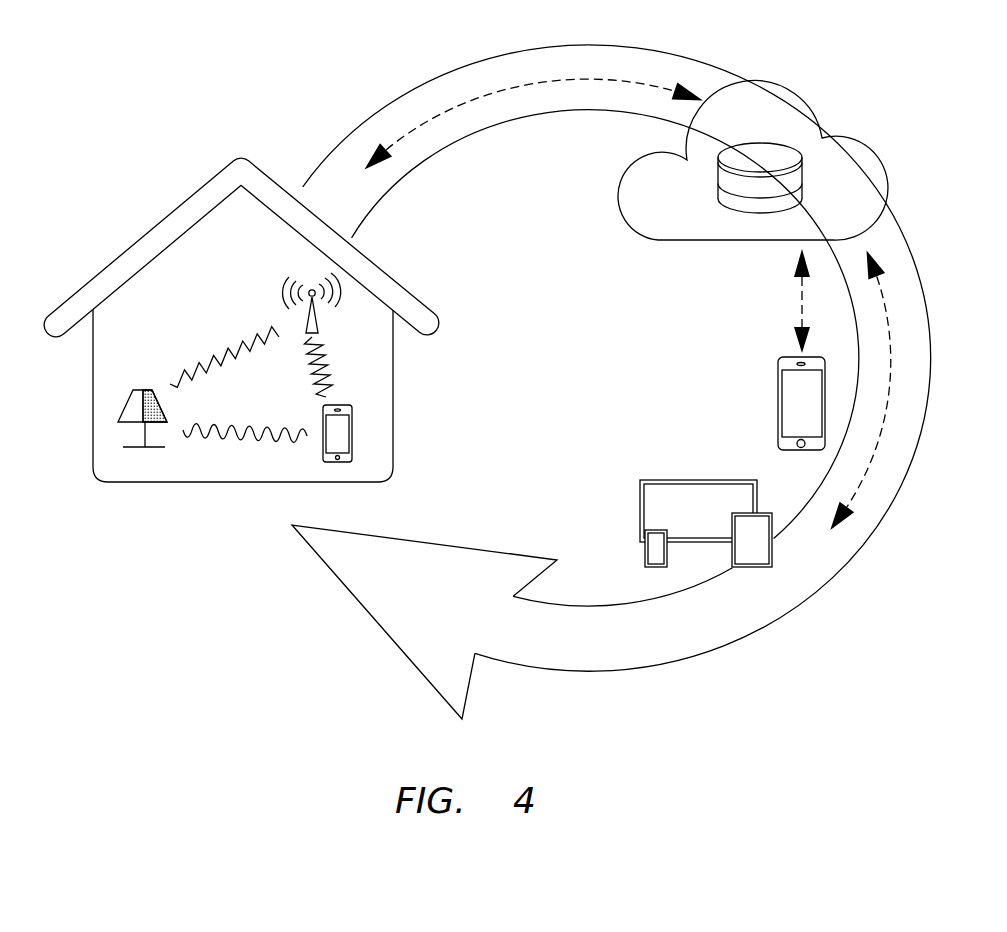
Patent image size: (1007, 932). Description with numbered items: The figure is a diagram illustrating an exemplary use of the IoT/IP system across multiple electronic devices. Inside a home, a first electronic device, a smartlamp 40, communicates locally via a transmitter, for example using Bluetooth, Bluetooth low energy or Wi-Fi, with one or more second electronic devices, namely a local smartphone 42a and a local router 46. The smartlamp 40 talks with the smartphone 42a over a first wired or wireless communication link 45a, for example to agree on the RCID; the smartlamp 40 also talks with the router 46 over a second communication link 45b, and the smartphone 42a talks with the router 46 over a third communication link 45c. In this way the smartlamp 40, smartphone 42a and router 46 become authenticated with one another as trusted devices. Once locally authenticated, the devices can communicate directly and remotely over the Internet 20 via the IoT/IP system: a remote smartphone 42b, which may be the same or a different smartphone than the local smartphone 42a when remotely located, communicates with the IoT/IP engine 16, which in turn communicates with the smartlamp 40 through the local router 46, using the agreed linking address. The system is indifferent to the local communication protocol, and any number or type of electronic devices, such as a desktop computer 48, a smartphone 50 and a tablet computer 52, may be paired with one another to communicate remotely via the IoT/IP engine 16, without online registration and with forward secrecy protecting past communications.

The IoT/IP engine 16 is at (772, 143).
The Internet 20 is at (627, 197).
The smartlamp 40 is at (118, 413).
The local smartphone 42a is at (352, 423).
The remote smartphone 42b is at (778, 372).
The first communication link 45a is at (225, 445).
The second communication link 45b is at (200, 355).
The third communication link 45c is at (327, 380).
The local router 46 is at (287, 293).
The desktop computer 48 is at (640, 493).
The smartphone 50 is at (645, 553).
The tablet computer 52 is at (772, 547).